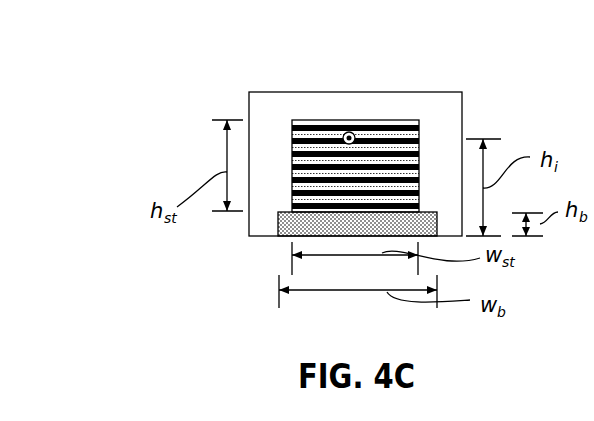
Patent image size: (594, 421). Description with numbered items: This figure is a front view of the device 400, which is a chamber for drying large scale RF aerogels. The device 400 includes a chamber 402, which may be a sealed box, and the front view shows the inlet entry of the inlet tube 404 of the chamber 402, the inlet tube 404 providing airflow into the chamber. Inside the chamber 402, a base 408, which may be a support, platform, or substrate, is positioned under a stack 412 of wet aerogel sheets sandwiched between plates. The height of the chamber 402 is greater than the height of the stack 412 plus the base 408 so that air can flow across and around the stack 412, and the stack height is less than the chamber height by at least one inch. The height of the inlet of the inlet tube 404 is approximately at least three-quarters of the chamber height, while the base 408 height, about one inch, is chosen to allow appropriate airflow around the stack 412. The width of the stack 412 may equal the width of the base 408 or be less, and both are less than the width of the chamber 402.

The device 400 is at (246, 30).
The chamber 402 is at (383, 91).
The inlet tube 404 is at (345, 134).
The base 408 is at (292, 225).
The stack 412 is at (433, 143).